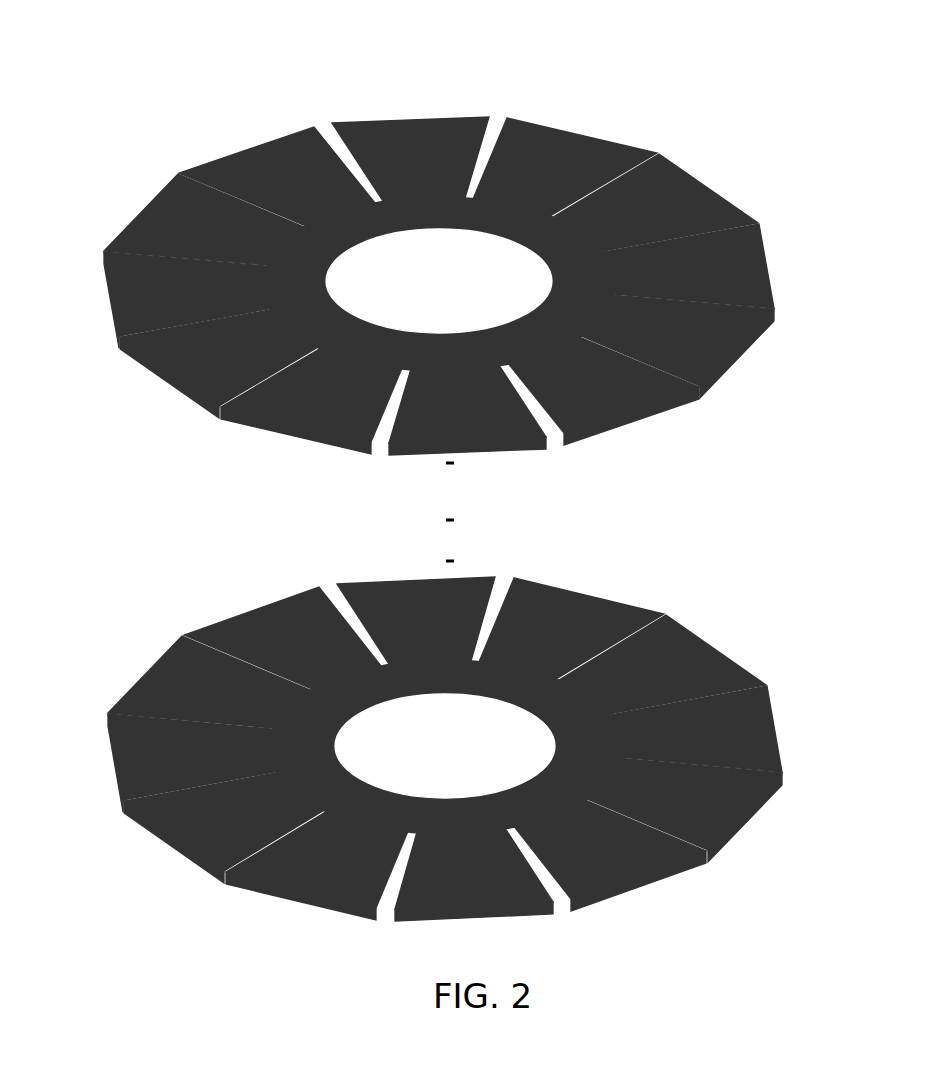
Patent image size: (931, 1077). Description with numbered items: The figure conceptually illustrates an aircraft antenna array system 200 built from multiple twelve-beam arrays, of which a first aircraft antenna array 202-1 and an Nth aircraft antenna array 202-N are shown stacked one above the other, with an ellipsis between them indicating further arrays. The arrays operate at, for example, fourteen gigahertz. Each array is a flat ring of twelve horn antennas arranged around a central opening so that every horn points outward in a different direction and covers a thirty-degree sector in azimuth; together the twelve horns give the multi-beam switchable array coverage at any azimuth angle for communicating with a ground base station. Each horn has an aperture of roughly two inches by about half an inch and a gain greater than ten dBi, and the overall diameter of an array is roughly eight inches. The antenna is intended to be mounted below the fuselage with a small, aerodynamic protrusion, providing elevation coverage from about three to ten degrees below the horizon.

The aircraft antenna array system 200 is at (282, 54).
The aircraft antenna array 202-1 is at (151, 154).
The aircraft antenna array 202-N is at (283, 544).